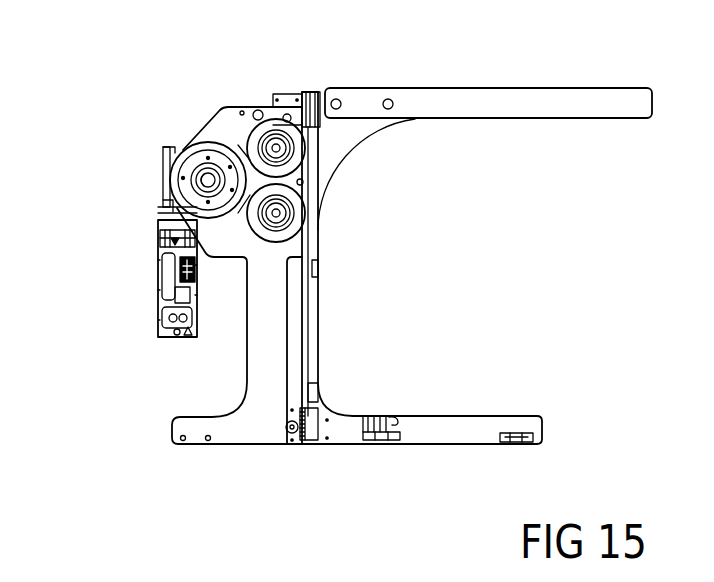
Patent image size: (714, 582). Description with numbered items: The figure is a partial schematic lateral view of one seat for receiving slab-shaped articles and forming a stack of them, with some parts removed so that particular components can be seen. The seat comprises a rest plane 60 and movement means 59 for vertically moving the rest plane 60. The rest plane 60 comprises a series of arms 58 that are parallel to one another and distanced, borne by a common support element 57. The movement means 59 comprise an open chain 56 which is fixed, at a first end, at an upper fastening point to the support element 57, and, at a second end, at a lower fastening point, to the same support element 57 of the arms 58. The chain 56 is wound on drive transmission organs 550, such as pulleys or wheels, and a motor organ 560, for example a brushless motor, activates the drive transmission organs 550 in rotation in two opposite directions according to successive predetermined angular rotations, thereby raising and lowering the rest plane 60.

The open chain 56 is at (222, 115).
The support element 57 is at (343, 138).
The arms 58 is at (460, 107).
The movement means 59 is at (117, 197).
The rest plane 60 is at (528, 120).
The drive transmission organs 550 is at (190, 153).
The motor organ 560 is at (160, 258).